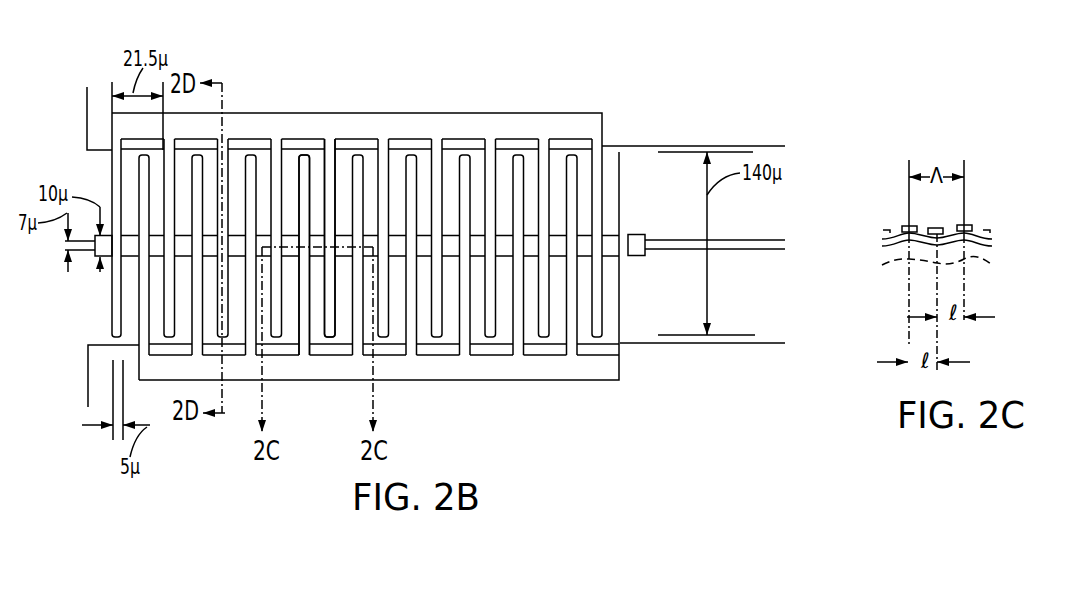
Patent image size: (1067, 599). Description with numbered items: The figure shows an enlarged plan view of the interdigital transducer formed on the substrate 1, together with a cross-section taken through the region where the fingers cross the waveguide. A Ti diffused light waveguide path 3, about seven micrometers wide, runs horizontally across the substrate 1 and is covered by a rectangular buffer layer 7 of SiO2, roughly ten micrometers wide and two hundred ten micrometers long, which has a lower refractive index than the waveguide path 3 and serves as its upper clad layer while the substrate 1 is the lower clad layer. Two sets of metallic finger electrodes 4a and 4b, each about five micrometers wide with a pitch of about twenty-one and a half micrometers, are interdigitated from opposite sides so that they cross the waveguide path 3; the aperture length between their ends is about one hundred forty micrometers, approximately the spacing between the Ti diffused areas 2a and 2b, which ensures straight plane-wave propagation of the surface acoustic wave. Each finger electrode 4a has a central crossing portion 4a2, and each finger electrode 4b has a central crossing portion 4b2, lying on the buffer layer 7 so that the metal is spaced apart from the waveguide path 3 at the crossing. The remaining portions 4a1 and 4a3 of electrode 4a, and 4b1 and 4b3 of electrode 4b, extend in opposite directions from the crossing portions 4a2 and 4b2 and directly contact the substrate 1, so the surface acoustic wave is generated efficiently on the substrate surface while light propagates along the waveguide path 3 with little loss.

In FIG. 2B, the substrate 1 is at (762, 303).
In FIG. 2C, the substrate 1 is at (982, 280).
In FIG. 2B, the Ti diffused area 2a is at (757, 119).
In FIG. 2B, the Ti diffused area 2b is at (757, 365).
In FIG. 2B, the light waveguide path 3 is at (773, 237).
In FIG. 2C, the light waveguide path 3 is at (982, 250).
In FIG. 2B, the finger electrode 4a is at (344, 249).
In FIG. 2B, the portion of finger electrode 4a1 is at (330, 173).
In FIG. 2B, the crossing portion 4a2 is at (335, 245).
In FIG. 2C, the crossing portion 4a2 is at (902, 225).
In FIG. 2B, the portion of finger electrode 4a3 is at (332, 300).
In FIG. 2B, the finger electrode 4b is at (353, 234).
In FIG. 2B, the portion of finger electrode 4b1 is at (302, 300).
In FIG. 2B, the crossing portion 4b2 is at (302, 243).
In FIG. 2C, the crossing portion 4b2 is at (935, 228).
In FIG. 2B, the portion of finger electrode 4b3 is at (302, 172).
In FIG. 2B, the buffer layer 7 is at (640, 232).
In FIG. 2C, the buffer layer 7 is at (993, 238).